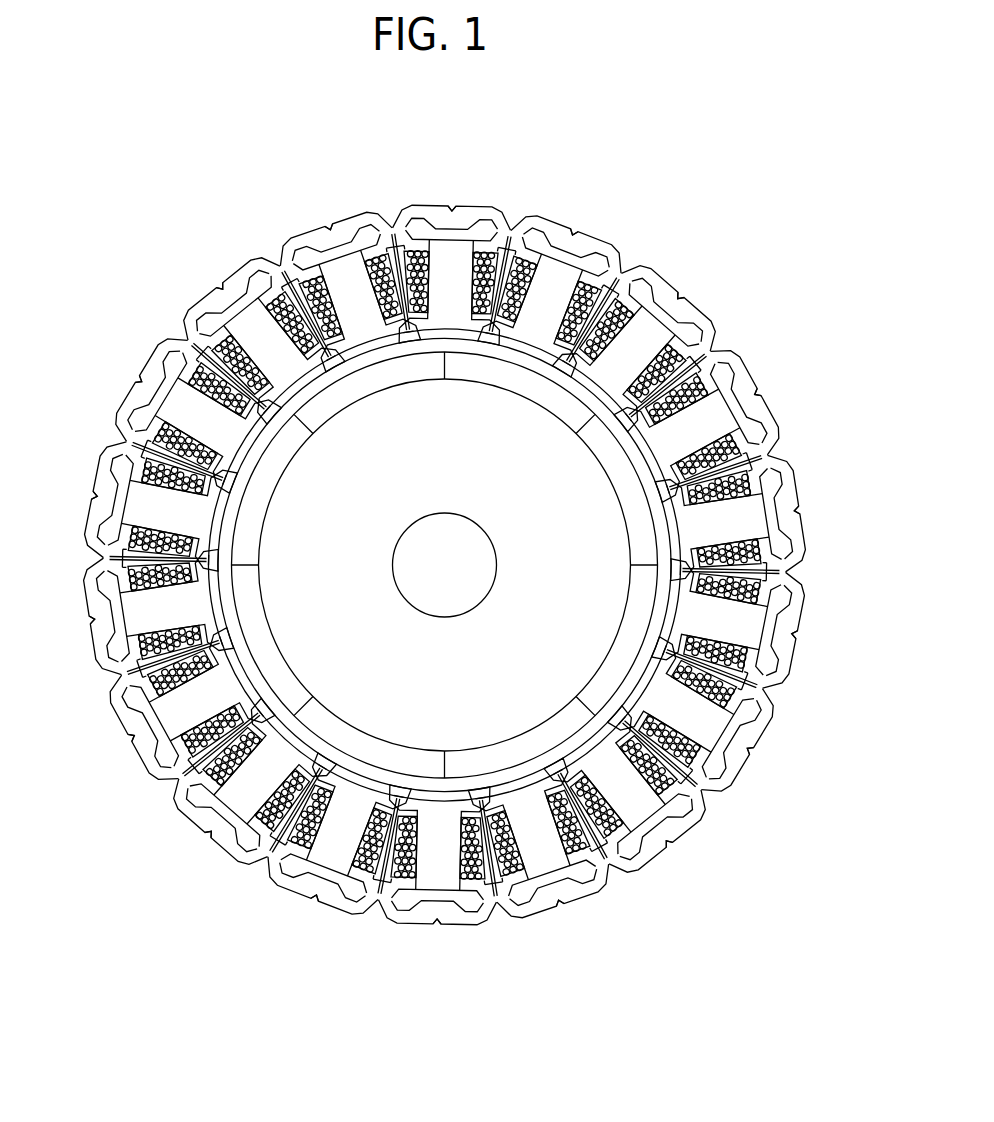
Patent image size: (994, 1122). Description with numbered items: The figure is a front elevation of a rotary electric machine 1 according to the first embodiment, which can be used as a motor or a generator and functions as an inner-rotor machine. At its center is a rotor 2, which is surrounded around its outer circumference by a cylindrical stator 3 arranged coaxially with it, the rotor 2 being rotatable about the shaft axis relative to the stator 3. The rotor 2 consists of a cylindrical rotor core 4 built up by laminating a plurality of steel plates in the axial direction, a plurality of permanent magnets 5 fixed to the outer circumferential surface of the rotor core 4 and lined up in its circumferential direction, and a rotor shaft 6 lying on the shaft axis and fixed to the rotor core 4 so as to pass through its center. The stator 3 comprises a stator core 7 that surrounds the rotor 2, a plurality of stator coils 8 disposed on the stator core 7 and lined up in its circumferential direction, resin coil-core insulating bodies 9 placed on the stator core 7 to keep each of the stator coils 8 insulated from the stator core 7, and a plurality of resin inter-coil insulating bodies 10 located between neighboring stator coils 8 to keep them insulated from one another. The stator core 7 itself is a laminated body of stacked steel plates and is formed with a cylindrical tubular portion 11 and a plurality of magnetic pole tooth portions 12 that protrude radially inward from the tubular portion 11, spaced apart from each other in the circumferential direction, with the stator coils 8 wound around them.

The rotary electric machine 1 is at (668, 238).
The rotor 2 is at (612, 770).
The stator 3 is at (717, 357).
The rotor core 4 is at (487, 720).
The permanent magnets 5 is at (413, 762).
The rotor shaft 6 is at (425, 590).
The stator core 7 is at (90, 650).
The stator coils 8 is at (130, 580).
The coil-core insulating bodies 9 is at (115, 482).
The inter-coil insulating bodies 10 is at (207, 370).
The tubular portion 11 is at (142, 765).
The magnetic pole tooth portions 12 is at (626, 460).